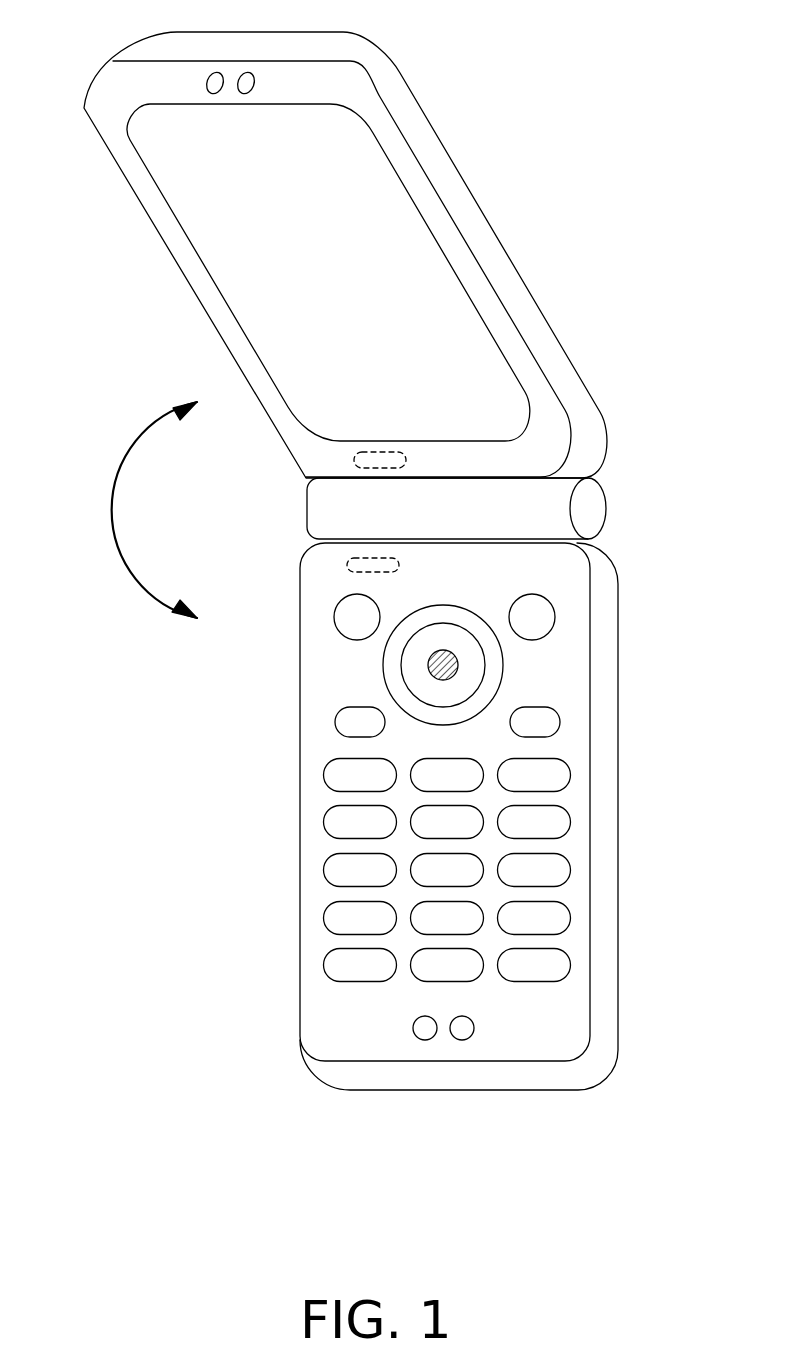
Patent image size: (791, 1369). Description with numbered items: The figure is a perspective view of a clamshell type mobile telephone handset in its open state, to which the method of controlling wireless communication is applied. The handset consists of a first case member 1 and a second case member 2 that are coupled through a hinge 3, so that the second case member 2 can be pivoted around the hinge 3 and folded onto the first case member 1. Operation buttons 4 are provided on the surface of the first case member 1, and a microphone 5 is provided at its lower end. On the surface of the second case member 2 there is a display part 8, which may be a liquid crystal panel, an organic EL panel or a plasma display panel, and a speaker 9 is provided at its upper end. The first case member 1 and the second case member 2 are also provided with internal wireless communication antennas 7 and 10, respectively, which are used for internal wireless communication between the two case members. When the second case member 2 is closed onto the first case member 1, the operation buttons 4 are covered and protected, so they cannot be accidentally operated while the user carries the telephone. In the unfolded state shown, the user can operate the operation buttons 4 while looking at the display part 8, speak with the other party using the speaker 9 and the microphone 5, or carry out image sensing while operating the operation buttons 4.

The first case member 1 is at (300, 814).
The second case member 2 is at (182, 277).
The hinge 3 is at (307, 508).
The operation buttons 4 is at (571, 773).
The microphone 5 is at (462, 1041).
The internal wireless communication antenna 7 is at (347, 567).
The display part 8 is at (402, 253).
The speaker 9 is at (222, 72).
The internal wireless communication antenna 10 is at (347, 458).